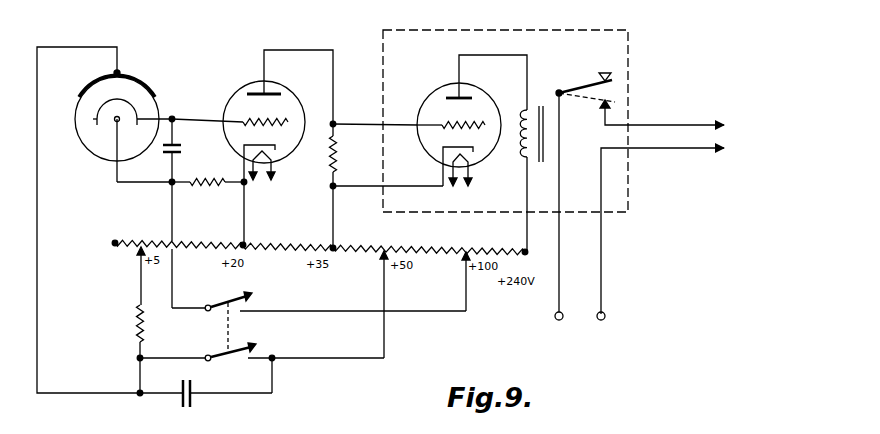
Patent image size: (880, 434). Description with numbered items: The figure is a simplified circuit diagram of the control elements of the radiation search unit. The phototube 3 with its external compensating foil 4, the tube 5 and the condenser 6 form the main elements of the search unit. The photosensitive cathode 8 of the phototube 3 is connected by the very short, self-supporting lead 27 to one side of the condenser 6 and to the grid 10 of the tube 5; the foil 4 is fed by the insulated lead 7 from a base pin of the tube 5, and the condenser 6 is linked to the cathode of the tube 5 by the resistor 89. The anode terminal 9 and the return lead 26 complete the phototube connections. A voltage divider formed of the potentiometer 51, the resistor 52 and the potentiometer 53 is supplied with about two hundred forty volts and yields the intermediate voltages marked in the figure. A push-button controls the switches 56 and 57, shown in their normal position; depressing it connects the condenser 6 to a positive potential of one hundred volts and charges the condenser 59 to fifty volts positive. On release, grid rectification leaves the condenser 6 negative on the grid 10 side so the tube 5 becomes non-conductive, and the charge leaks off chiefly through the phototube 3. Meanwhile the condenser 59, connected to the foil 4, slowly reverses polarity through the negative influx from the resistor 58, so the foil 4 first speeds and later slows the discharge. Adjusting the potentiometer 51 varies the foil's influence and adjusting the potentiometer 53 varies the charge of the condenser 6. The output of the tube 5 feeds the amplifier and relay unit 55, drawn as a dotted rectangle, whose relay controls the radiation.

The phototube 3 is at (89, 152).
The metal foil 4 is at (85, 96).
The tube 5 is at (232, 92).
The condenser 6 is at (180, 147).
The insulated lead 7 is at (68, 44).
The photosensitive cathode 8 is at (93, 119).
The anode terminal 9 is at (115, 123).
The grid 10 is at (210, 118).
The phototube return lead 26 is at (169, 171).
The lead 27 is at (164, 117).
The potentiometer 51 is at (222, 226).
The resistor 52 is at (292, 241).
The potentiometer 53 is at (413, 244).
The amplifier and relay unit 55 is at (628, 56).
The switch 56 is at (226, 290).
The switch 57 is at (250, 350).
The resistor 58 is at (147, 318).
The condenser 59 is at (193, 386).
The resistor 89 is at (226, 180).